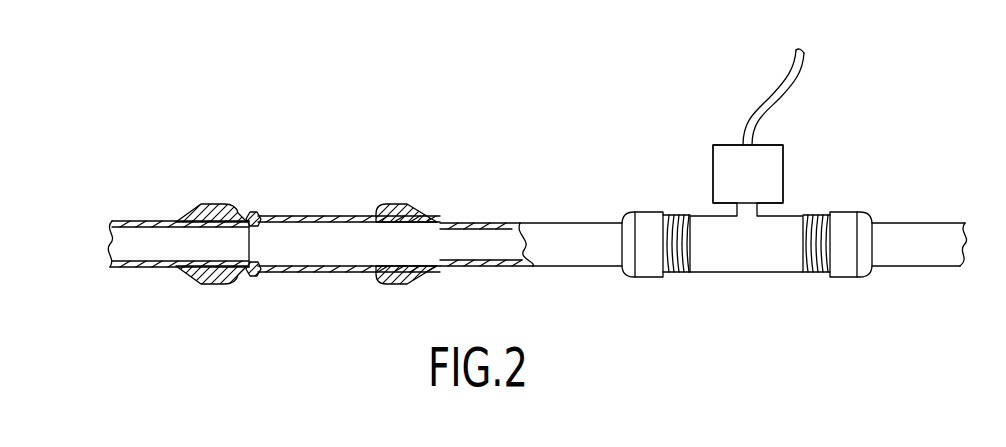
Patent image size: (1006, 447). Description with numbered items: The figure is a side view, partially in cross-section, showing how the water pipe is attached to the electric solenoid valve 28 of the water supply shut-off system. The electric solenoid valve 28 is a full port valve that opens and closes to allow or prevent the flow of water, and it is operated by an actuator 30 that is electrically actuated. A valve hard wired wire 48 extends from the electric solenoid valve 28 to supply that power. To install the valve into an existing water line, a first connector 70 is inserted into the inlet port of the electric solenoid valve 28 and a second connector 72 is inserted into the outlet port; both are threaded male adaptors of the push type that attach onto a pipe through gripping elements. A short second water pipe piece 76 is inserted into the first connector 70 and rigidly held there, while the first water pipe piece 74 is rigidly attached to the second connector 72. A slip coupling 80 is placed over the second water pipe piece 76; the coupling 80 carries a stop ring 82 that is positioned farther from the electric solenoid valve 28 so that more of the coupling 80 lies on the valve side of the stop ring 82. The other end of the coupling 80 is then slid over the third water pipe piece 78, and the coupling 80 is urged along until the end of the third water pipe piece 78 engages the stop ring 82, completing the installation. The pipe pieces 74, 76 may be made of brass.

The electric solenoid valve 28 is at (797, 158).
The actuator 30 is at (720, 170).
The valve hard wired wire 48 is at (778, 90).
The first connector 70 is at (657, 278).
The second connector 72 is at (838, 278).
The first water pipe piece 74 is at (925, 227).
The second water pipe piece 76 is at (538, 224).
The third water pipe piece 78 is at (137, 219).
The coupling 80 is at (322, 215).
The stop ring 82 is at (254, 211).